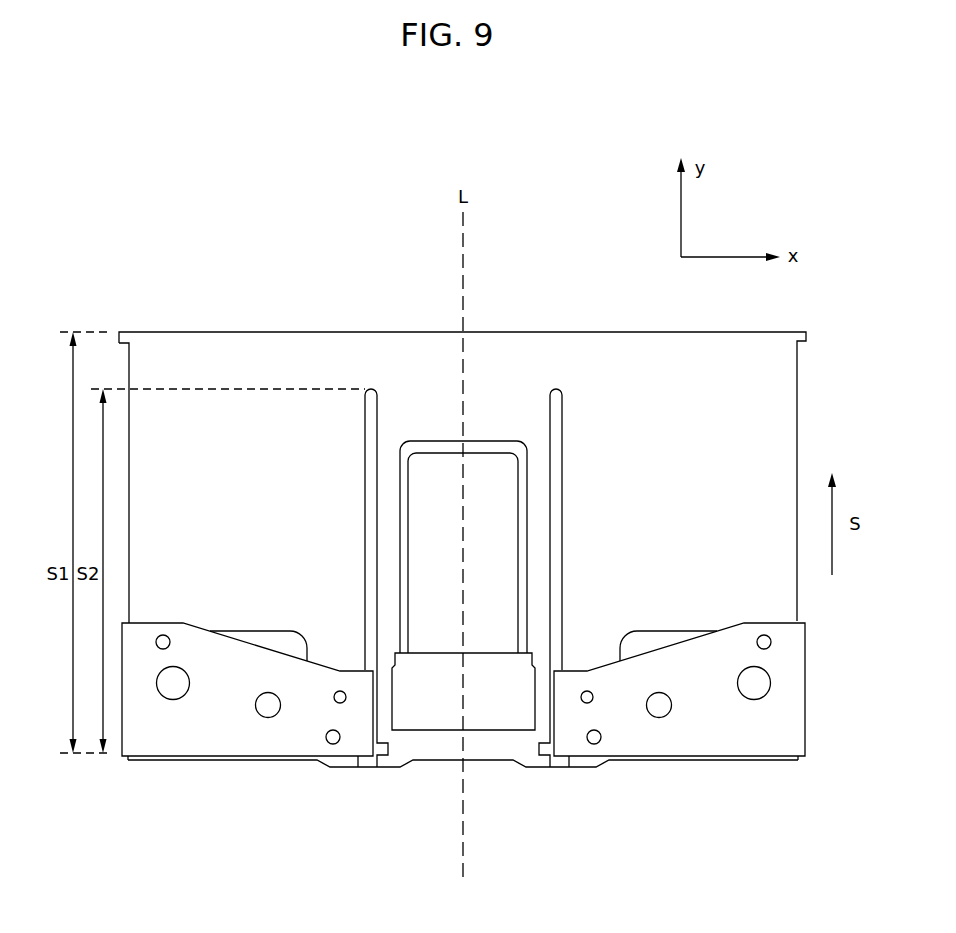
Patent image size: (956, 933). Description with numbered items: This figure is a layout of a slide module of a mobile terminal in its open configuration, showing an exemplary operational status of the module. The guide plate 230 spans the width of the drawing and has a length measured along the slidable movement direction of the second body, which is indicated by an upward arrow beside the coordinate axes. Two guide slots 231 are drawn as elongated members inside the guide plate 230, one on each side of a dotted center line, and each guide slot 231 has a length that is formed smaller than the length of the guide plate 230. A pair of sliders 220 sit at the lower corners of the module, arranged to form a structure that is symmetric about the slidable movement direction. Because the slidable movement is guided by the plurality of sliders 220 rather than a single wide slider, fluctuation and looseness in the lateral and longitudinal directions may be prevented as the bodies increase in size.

The slider 220 is at (225, 745).
The guide plate 230 is at (258, 358).
The guide slot 231 is at (367, 387).